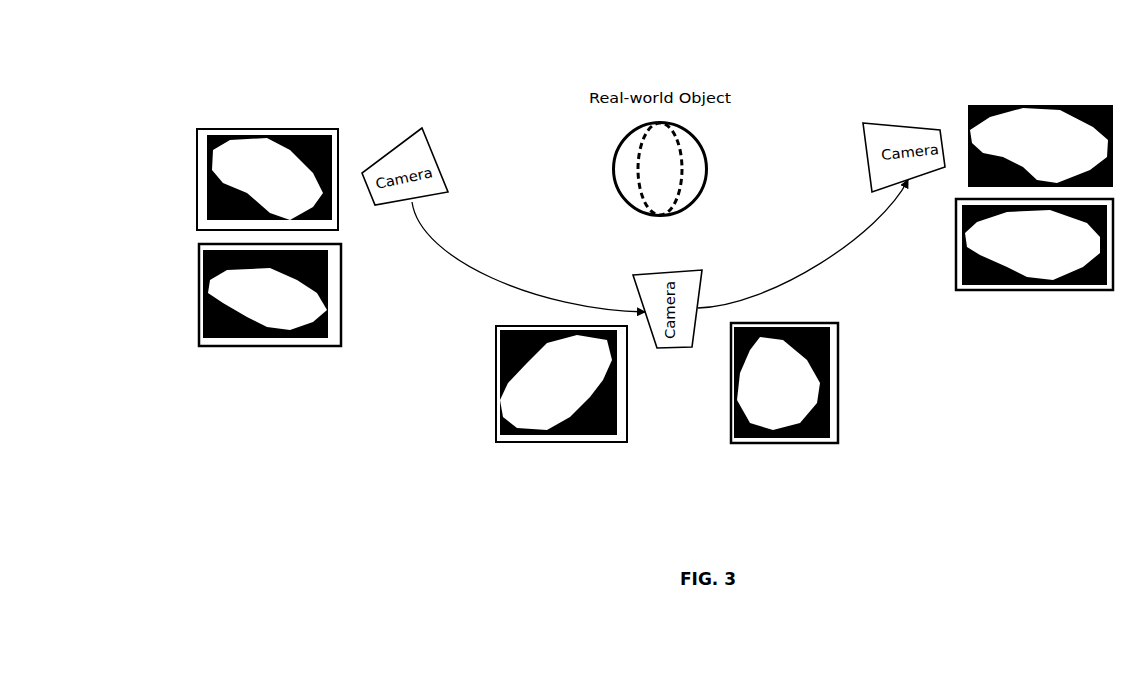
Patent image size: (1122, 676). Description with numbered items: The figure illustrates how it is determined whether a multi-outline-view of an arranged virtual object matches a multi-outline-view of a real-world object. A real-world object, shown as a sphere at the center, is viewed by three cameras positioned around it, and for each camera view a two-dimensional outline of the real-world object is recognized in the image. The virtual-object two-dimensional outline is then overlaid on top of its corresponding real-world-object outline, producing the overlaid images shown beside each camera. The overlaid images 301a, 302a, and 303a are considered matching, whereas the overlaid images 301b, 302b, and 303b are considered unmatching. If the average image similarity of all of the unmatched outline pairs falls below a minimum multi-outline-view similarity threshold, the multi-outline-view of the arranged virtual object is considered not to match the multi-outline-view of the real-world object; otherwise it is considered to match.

The overlaid image 301a is at (252, 122).
The overlaid image 301b is at (265, 348).
The overlaid image 302a is at (562, 443).
The overlaid image 302b is at (793, 445).
The overlaid image 303a is at (1047, 102).
The overlaid image 303b is at (1048, 290).